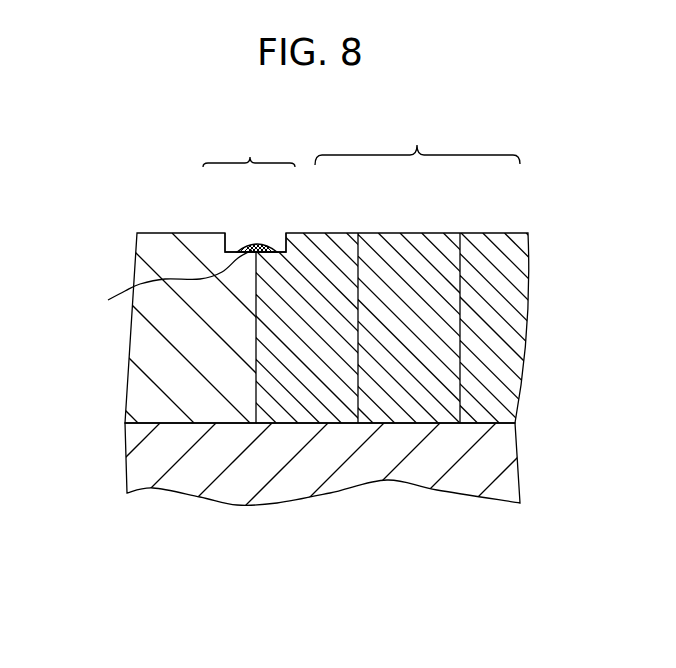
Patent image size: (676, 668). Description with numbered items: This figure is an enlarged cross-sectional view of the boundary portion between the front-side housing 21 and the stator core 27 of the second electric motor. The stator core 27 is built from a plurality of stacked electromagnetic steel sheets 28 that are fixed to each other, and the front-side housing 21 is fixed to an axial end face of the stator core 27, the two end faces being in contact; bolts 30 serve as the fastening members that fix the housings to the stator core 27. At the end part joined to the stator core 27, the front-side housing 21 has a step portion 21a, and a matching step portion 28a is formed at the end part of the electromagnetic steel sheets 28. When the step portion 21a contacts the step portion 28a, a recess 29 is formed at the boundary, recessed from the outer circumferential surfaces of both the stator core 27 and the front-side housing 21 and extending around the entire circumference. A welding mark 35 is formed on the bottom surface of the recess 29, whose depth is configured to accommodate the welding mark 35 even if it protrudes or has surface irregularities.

The front-side housing 21 is at (163, 243).
The step portion 21a is at (233, 245).
The stator core 27 is at (417, 141).
The electromagnetic steel sheets 28 is at (322, 238).
The step portion 28a is at (274, 242).
The recess 29 is at (249, 147).
The bolts 30 is at (467, 480).
The welding mark 35 is at (165, 283).